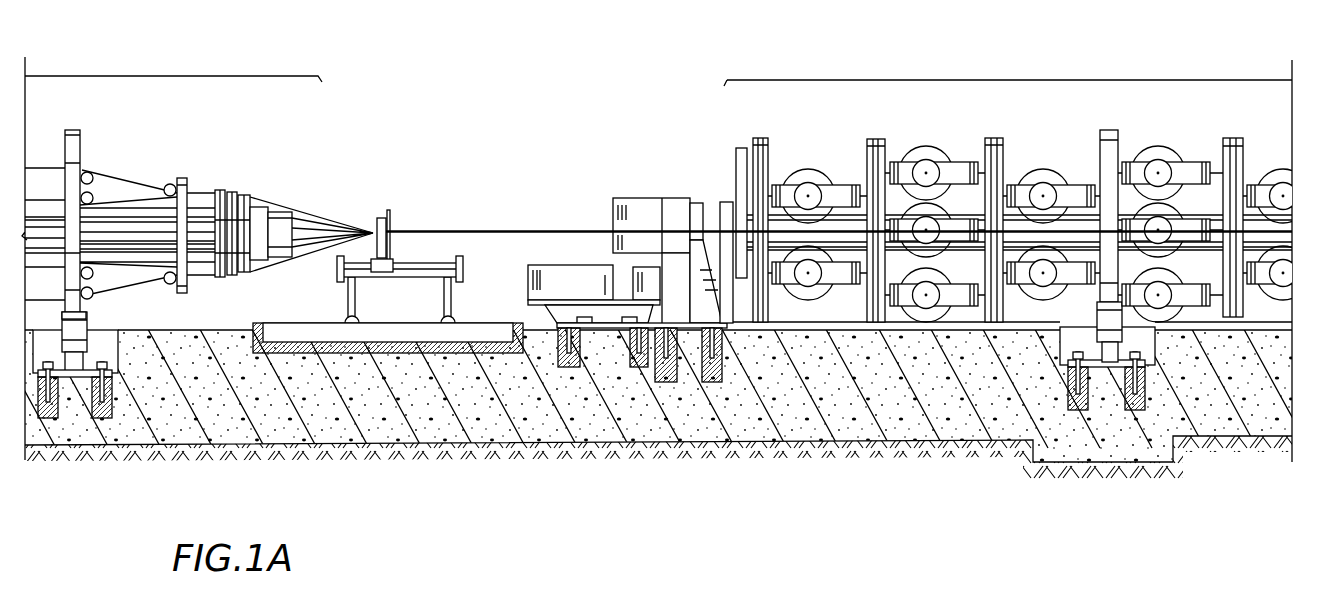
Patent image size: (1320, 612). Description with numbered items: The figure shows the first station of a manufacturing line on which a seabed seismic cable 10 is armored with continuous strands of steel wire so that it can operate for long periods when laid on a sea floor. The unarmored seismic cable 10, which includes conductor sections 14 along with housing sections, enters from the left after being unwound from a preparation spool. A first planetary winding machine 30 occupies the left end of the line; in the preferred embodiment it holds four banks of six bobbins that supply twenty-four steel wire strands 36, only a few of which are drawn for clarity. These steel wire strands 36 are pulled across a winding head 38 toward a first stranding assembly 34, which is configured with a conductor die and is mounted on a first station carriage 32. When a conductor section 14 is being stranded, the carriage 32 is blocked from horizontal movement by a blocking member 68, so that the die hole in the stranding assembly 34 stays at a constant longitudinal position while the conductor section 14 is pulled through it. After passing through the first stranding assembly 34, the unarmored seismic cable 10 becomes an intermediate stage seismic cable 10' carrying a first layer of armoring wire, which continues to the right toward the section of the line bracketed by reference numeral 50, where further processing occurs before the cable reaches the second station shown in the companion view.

The seismic cable 10 is at (311, 195).
The intermediate stage seismic cable 10' is at (839, 204).
The conductor section 14 is at (312, 230).
The first planetary winding machine 30 is at (91, 75).
The first station carriage 32 is at (428, 255).
The stranding assembly 34 is at (378, 213).
The steel wire strands 36 is at (124, 192).
The winding head 38 is at (257, 160).
The roll stand section 50 is at (1125, 80).
The blocking member 68 is at (484, 323).